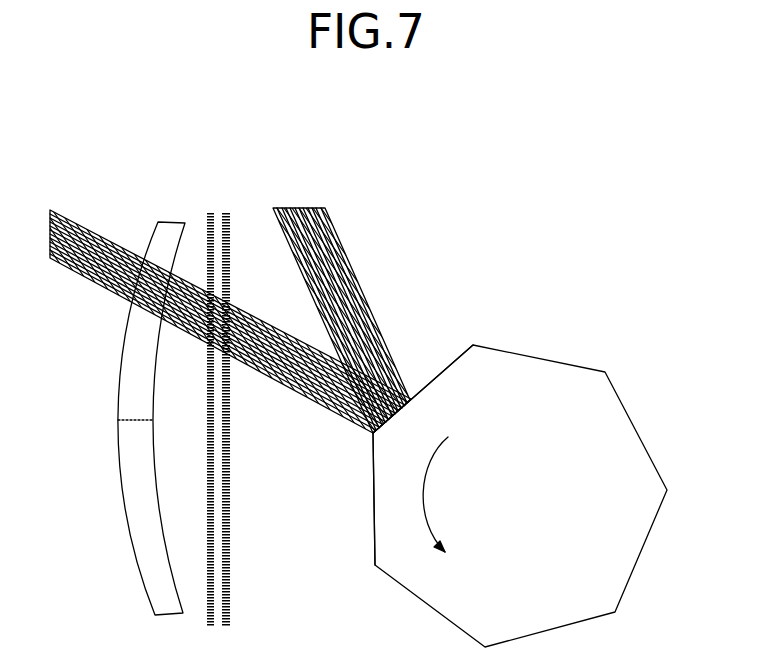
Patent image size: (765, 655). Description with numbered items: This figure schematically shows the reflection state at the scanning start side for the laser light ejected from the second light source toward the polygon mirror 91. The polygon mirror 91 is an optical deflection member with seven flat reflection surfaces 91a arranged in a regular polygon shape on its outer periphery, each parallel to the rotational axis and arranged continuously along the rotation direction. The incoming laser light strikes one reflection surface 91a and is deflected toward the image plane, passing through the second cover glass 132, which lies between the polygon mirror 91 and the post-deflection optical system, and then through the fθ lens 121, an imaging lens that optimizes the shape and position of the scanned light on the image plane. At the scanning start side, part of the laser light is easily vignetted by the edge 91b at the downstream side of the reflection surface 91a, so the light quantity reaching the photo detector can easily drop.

The fθ lens 121 is at (125, 498).
The second cover glass 132 is at (230, 523).
The polygon mirror 91 is at (636, 548).
The reflection surface 91a is at (432, 380).
The edge at the downstream side of the reflection surface 91b is at (370, 437).